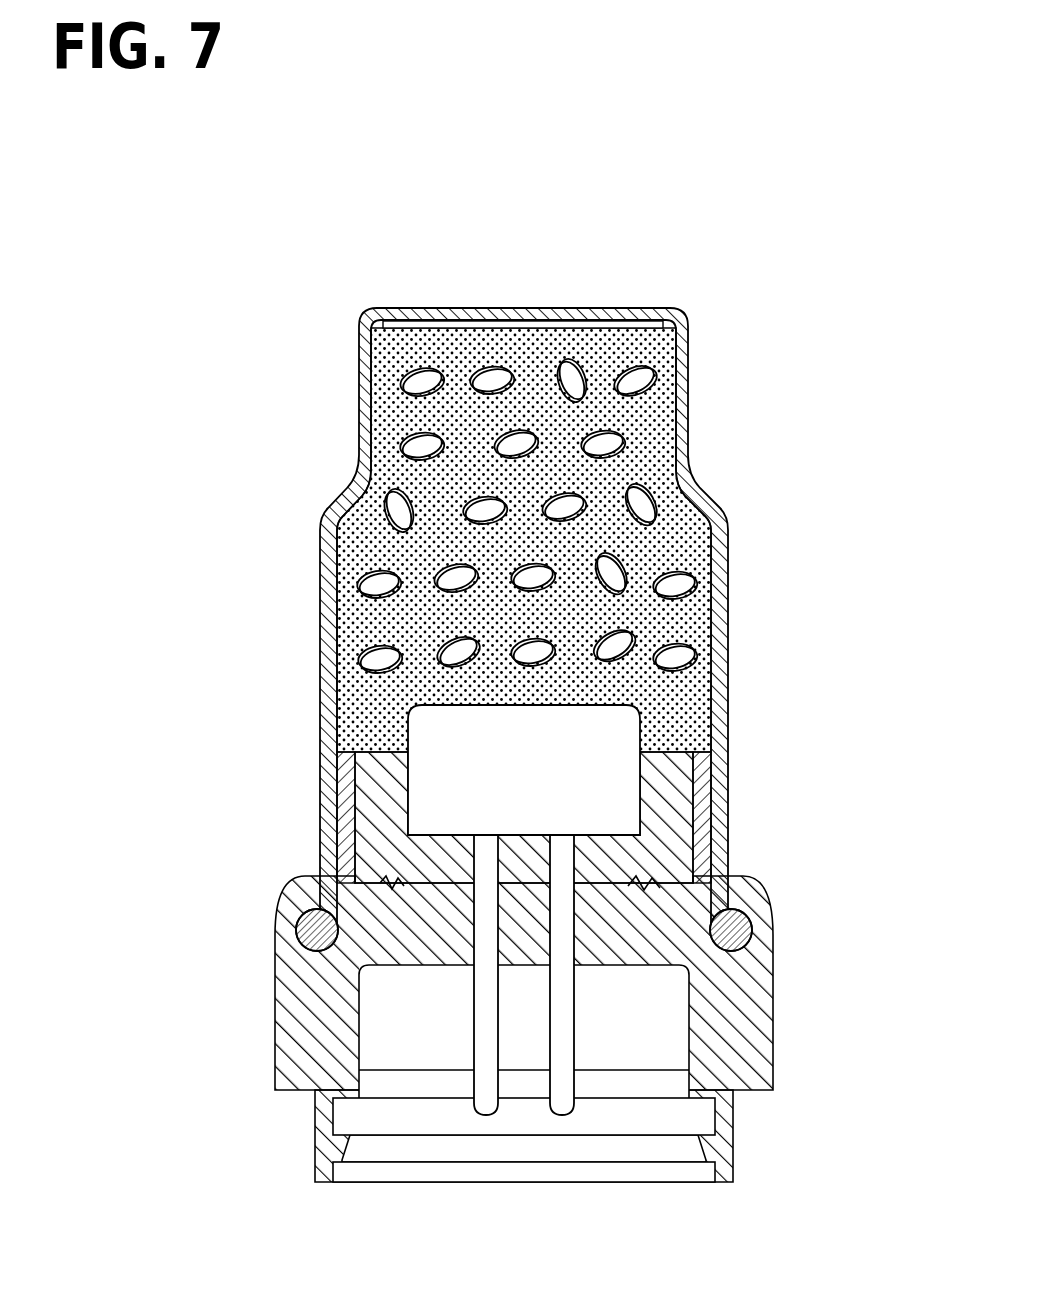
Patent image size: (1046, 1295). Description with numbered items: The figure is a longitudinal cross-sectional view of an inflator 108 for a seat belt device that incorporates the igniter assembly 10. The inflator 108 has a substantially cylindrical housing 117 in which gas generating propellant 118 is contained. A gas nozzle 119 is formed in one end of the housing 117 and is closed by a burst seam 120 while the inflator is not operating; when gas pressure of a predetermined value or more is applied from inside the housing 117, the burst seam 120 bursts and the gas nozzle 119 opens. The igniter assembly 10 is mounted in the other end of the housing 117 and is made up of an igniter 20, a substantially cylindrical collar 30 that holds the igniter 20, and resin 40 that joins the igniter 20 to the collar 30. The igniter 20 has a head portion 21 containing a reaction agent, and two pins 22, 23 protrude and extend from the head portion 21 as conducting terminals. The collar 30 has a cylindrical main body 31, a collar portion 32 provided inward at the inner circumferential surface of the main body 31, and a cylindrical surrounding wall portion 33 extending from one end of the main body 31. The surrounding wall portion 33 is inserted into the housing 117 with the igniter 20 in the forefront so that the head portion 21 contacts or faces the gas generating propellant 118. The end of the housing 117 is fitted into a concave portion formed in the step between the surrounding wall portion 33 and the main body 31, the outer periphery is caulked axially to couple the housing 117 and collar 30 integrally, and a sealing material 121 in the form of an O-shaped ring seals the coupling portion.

The igniter assembly 10 is at (602, 1029).
The igniter 20 is at (542, 789).
The head portion 21 is at (632, 740).
The pin 22 is at (498, 1112).
The pin 23 is at (498, 1112).
The collar 30 is at (815, 982).
The main body 31 is at (775, 1050).
The collar portion 32 is at (628, 940).
The surrounding wall portion 33 is at (710, 795).
The resin 40 is at (362, 724).
The inflator 108 is at (576, 580).
The housing 117 is at (729, 582).
The gas generating propellant 118 is at (392, 503).
The gas nozzle 119 is at (543, 324).
The burst seam 120 is at (606, 307).
The sealing material 121 is at (300, 932).